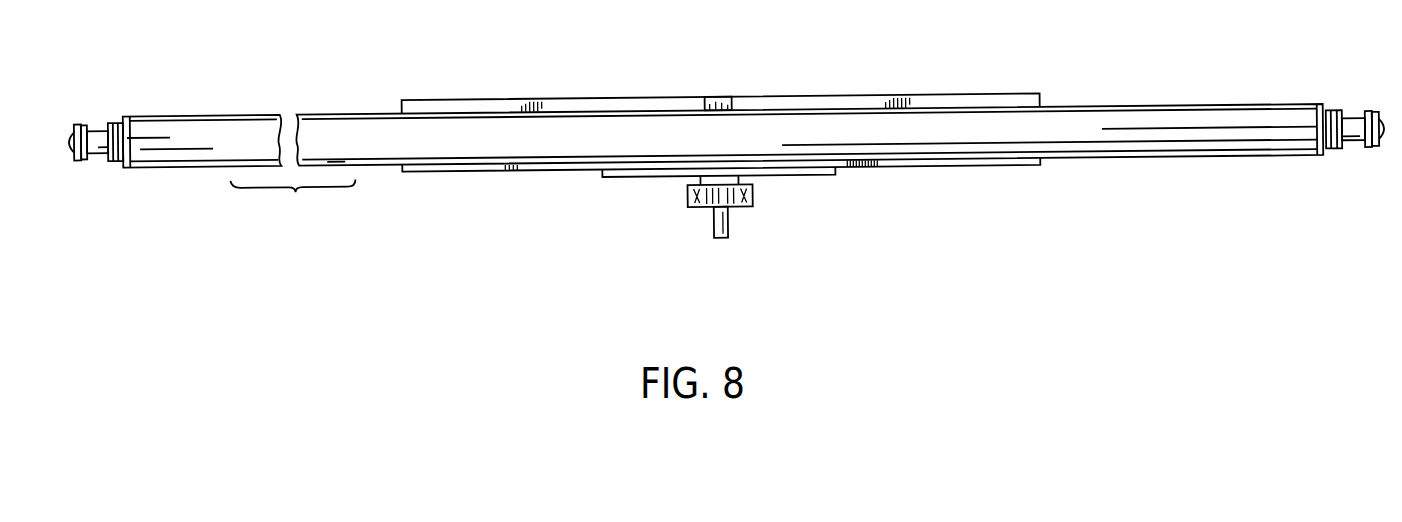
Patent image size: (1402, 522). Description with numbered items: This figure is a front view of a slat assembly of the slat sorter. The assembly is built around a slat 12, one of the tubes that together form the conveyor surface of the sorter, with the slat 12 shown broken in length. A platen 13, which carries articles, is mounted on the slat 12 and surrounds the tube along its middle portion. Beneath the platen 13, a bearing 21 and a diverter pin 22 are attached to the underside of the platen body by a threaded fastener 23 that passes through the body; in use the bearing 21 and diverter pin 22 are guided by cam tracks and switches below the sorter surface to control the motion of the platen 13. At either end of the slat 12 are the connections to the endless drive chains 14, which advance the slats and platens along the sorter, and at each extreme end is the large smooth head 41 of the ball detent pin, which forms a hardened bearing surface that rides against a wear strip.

The slat 12 is at (1093, 115).
The platen 13 is at (505, 97).
The endless drive chain 14 is at (99, 121).
The bearing 21 is at (687, 205).
The diverter pin 22 is at (713, 228).
The threaded fastener 23 is at (717, 96).
The head 41 is at (68, 155).